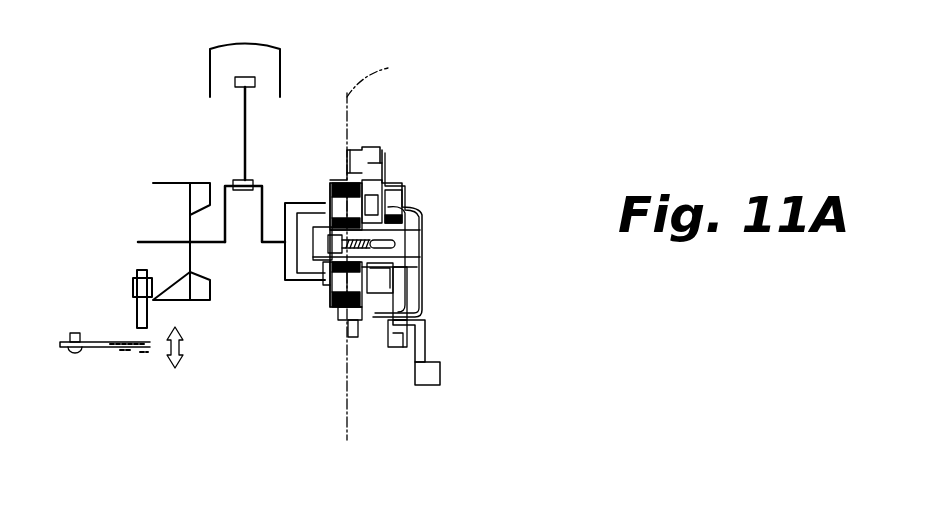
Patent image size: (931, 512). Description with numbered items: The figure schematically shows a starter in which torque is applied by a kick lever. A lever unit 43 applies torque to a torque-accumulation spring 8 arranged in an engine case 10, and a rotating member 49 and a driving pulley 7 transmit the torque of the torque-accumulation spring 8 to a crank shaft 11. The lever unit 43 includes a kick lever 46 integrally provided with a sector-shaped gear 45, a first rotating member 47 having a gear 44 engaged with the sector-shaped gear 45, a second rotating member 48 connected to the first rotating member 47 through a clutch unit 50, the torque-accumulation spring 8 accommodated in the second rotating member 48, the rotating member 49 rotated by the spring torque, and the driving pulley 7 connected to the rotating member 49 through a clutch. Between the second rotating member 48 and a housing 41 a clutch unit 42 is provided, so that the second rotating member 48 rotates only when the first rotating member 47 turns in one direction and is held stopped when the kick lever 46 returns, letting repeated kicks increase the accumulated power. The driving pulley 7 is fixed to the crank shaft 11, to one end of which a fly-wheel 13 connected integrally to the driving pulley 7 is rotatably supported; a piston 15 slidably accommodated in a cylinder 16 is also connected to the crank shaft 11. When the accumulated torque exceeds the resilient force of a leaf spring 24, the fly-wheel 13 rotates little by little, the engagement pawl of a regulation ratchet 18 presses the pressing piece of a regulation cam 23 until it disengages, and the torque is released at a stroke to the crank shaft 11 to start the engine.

The driving pulley 7 is at (290, 278).
The torque-accumulation spring 8 is at (338, 307).
The engine case 10 is at (388, 246).
The crank shaft 11 is at (219, 244).
The fly-wheel 13 is at (153, 200).
The piston 15 is at (235, 82).
The cylinder 16 is at (210, 50).
The regulation ratchet 18 is at (133, 287).
The regulation cam 23 is at (138, 317).
The leaf spring 24 is at (125, 350).
The housing 41 is at (383, 160).
The clutch unit 42 is at (347, 170).
The lever unit 43 is at (427, 312).
The gear 44 is at (410, 210).
The sector-shaped gear 45 is at (412, 272).
The kick lever 46 is at (428, 362).
The first rotating member 47 is at (407, 203).
The second rotating member 48 is at (367, 150).
The rotating member 49 is at (323, 270).
The clutch unit 50 is at (385, 325).